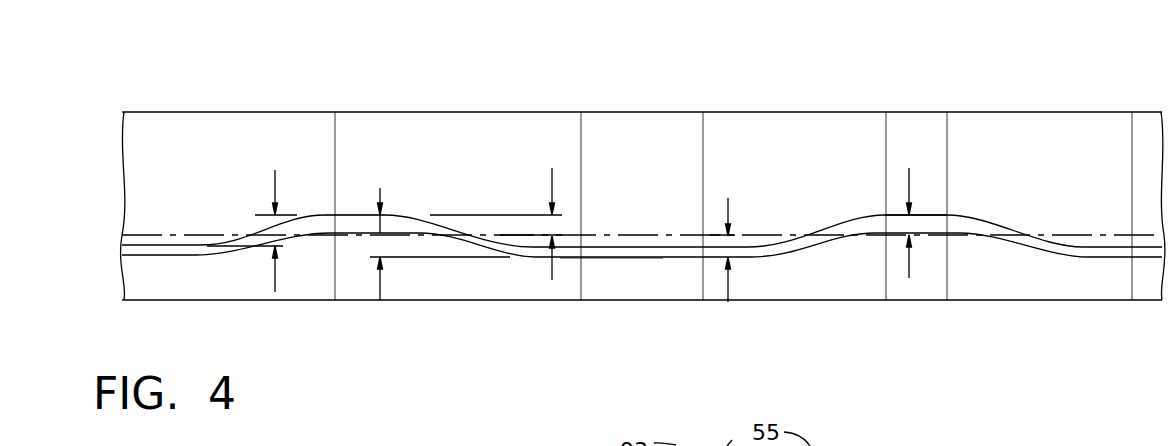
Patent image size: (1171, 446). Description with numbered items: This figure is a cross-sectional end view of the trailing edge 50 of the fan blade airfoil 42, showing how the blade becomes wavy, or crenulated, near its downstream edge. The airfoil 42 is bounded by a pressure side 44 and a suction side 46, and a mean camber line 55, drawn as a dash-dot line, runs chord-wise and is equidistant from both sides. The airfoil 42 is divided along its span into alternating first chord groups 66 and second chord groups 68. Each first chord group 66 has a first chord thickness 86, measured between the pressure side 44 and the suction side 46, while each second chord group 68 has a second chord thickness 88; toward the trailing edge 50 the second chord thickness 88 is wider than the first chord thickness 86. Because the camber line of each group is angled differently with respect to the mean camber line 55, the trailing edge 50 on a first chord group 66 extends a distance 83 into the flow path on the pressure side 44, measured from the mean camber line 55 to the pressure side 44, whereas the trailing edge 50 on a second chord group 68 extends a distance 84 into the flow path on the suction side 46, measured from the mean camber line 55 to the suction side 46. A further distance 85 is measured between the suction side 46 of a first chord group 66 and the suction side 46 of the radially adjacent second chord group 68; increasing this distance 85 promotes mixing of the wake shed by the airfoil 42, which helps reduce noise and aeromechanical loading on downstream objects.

The airfoil 42 is at (1013, 77).
The trailing edge 50 is at (642, 169).
The pressure side 44 is at (447, 243).
The suction side 46 is at (448, 222).
The mean camber line 55 is at (607, 235).
The first chord group 66 is at (629, 275).
The second chord group 68 is at (411, 179).
The distance 83 is at (378, 200).
The distance 84 is at (552, 180).
The distance 85 is at (275, 175).
The first chord thickness 86 is at (729, 290).
The second chord thickness 88 is at (908, 180).